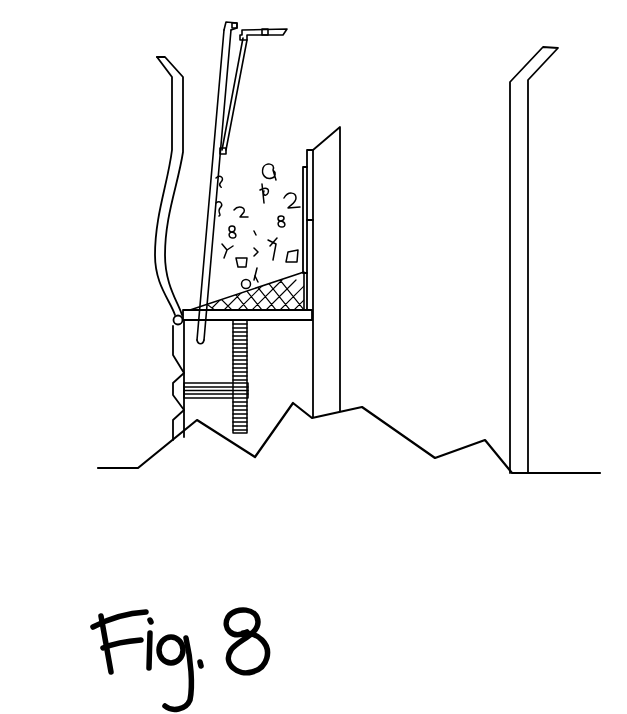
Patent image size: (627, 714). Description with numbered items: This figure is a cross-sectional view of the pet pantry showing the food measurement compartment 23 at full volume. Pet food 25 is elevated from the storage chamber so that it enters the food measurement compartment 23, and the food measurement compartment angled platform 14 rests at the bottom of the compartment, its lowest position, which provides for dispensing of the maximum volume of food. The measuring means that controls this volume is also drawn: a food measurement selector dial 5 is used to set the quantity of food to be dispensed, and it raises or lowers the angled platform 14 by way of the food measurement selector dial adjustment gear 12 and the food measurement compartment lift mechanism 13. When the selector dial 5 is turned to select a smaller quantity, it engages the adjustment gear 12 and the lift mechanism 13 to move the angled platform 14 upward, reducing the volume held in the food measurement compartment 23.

The food measurement selector dial 5 is at (184, 390).
The food measurement selector dial adjustment gear 12 is at (248, 398).
The food measurement compartment lift mechanism 13 is at (243, 357).
The food measurement compartment angled platform 14 is at (272, 294).
The food measurement compartment 23 is at (263, 222).
The pet food 25 is at (234, 260).